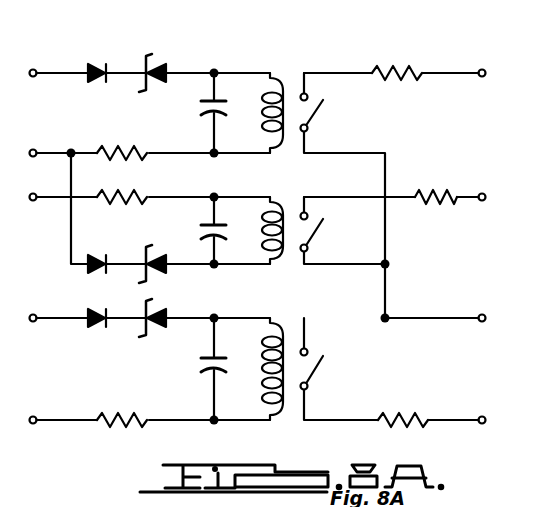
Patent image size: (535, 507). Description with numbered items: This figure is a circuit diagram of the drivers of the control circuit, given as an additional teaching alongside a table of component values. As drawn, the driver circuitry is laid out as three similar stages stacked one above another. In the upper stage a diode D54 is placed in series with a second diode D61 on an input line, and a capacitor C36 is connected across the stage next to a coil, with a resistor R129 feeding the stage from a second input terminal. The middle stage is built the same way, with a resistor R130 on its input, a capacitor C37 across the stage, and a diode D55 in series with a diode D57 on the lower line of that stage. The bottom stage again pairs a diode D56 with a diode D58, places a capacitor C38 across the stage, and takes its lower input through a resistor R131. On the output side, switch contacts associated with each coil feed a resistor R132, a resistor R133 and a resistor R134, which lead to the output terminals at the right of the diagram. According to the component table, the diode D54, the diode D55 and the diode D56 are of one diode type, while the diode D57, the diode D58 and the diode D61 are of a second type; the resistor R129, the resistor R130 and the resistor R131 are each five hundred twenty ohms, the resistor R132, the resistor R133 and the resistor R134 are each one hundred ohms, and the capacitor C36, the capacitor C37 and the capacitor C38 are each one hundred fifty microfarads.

The diode D54 is at (90, 60).
The diode D61 is at (157, 62).
The resistor R129 is at (116, 144).
The capacitor C36 is at (206, 112).
The resistor R130 is at (133, 190).
The capacitor C37 is at (200, 233).
The diode D55 is at (100, 273).
The diode D57 is at (166, 273).
The diode D56 is at (97, 328).
The diode D58 is at (161, 329).
The capacitor C38 is at (205, 368).
The resistor R131 is at (127, 424).
The resistor R132 is at (399, 78).
The resistor R133 is at (447, 200).
The resistor R134 is at (398, 410).